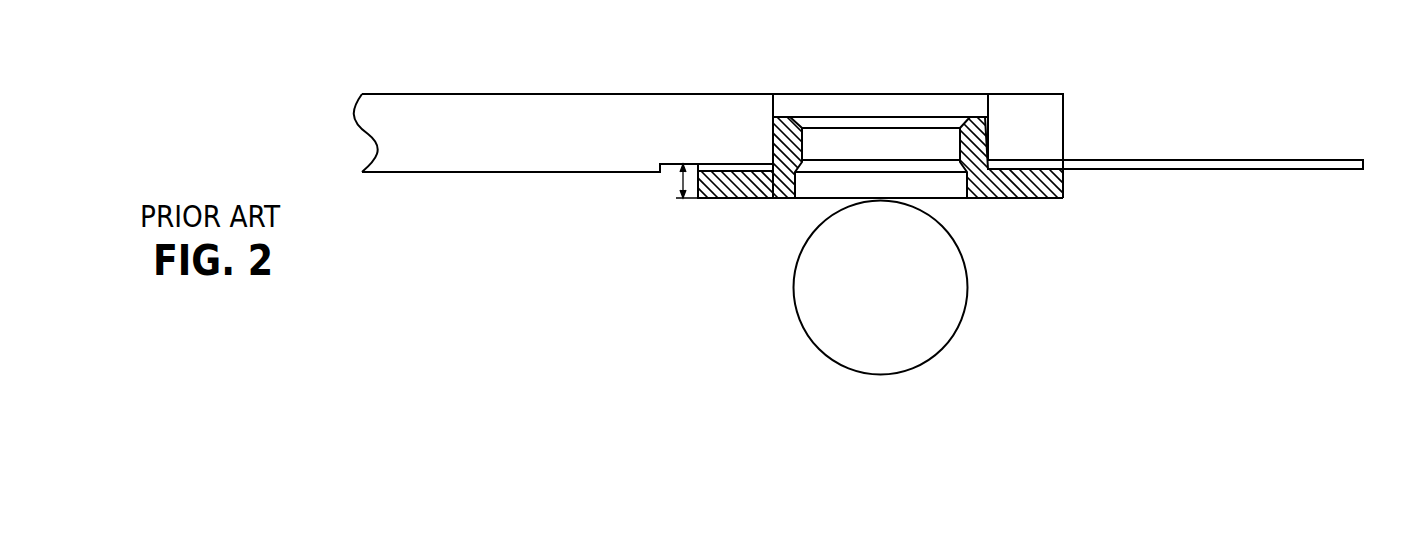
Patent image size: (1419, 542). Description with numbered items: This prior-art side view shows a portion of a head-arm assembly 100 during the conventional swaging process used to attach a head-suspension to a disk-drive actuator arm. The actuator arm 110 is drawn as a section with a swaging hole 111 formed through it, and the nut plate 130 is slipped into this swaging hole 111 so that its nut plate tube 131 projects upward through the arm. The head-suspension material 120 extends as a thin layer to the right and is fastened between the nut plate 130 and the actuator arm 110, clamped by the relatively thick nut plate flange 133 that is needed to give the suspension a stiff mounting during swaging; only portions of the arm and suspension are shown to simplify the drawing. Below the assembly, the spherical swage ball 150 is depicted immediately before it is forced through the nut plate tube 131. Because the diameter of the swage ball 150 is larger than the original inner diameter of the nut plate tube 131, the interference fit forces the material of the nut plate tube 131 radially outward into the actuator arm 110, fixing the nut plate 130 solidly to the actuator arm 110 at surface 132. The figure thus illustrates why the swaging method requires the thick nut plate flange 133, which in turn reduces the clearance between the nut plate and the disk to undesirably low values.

The head-arm assembly 100 is at (1105, 77).
The actuator arm 110 is at (513, 94).
The swaging hole 111 is at (789, 100).
The head-suspension material 120 is at (1205, 160).
The nut plate 130 is at (875, 143).
The nut plate tube 131 is at (889, 128).
The surface 132 is at (977, 124).
The nut plate flange 133 is at (676, 184).
The swage ball 150 is at (793, 288).